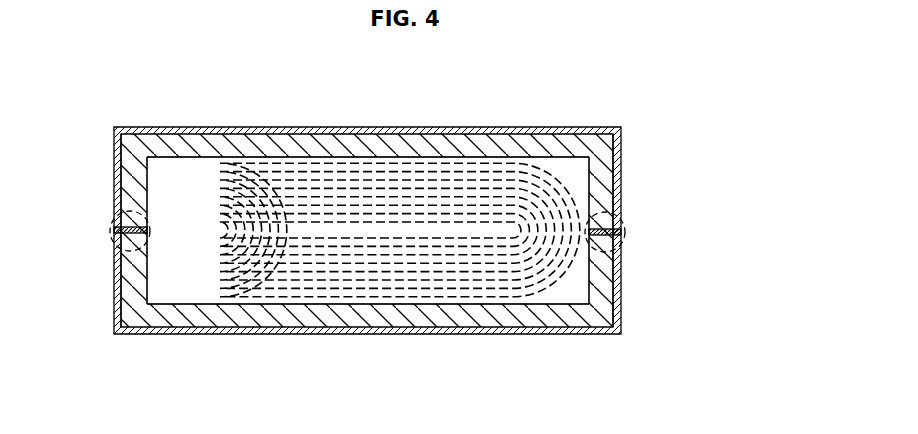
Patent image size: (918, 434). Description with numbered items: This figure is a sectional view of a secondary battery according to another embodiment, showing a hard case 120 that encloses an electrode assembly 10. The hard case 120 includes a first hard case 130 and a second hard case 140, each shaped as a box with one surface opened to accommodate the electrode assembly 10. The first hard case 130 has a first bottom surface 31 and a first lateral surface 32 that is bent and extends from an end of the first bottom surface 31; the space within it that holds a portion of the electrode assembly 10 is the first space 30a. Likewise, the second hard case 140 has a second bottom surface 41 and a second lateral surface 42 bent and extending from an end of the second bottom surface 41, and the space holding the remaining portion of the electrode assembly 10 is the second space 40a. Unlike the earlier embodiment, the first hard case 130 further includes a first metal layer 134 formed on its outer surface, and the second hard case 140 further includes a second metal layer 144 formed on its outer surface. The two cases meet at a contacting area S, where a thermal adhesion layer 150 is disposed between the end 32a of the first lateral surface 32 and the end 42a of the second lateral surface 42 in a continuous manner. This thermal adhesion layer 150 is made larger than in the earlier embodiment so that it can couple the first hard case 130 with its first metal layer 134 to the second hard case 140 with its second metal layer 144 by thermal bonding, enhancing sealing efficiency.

The electrode assembly 10 is at (318, 166).
The hard case 120 is at (407, 233).
The second hard case 140 is at (373, 152).
The first hard case 130 is at (379, 312).
The thermal adhesion layer 150 is at (633, 229).
The contacting area S is at (110, 241).
The second metal layer 144 is at (494, 128).
The first metal layer 134 is at (370, 333).
The second bottom surface 41 is at (387, 140).
The first bottom surface 31 is at (290, 315).
The second lateral surface 42 is at (603, 172).
The first lateral surface 32 is at (616, 312).
The end of the second lateral surface 42a is at (120, 230).
The end of the first lateral surface 32a is at (122, 245).
The second space 40a is at (172, 168).
The first space 30a is at (170, 294).